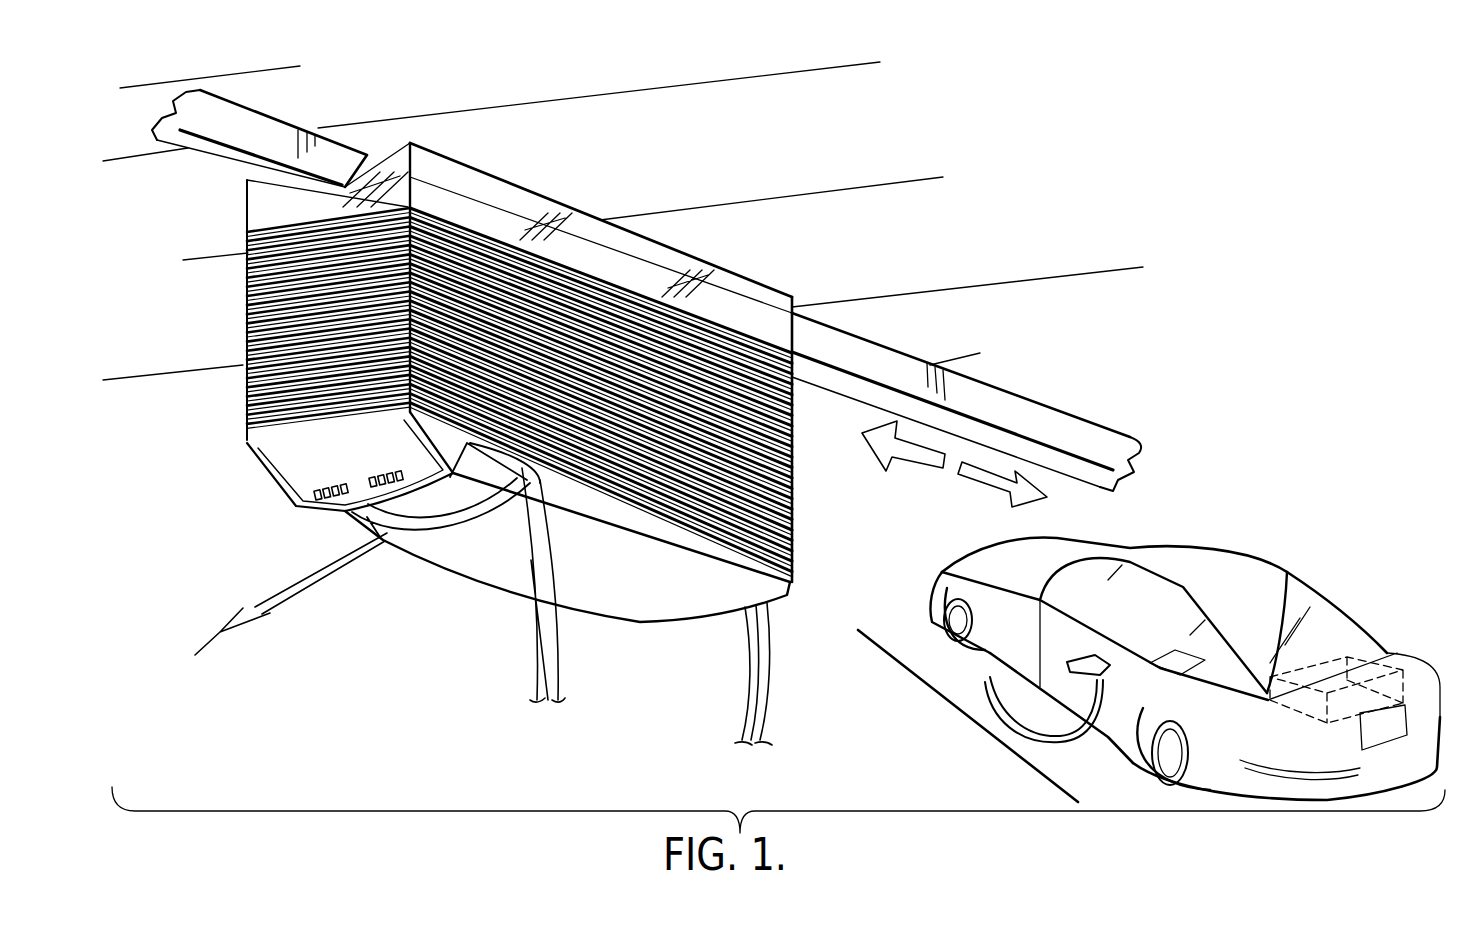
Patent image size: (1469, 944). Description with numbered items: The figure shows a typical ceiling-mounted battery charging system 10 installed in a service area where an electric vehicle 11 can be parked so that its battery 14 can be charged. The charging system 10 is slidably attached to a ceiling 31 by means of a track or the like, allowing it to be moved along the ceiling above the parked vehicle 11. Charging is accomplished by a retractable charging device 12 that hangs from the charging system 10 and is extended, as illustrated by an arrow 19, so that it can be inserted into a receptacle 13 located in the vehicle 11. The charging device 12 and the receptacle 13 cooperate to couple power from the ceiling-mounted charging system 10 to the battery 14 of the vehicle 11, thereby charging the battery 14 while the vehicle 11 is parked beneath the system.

The ceiling-mounted battery charging system 10 is at (397, 651).
The electric vehicle 11 is at (1263, 568).
The charging device 12 is at (450, 527).
The receptacle 13 is at (1160, 660).
The battery 14 is at (1338, 656).
The arrow 19 is at (248, 606).
The ceiling 31 is at (212, 327).